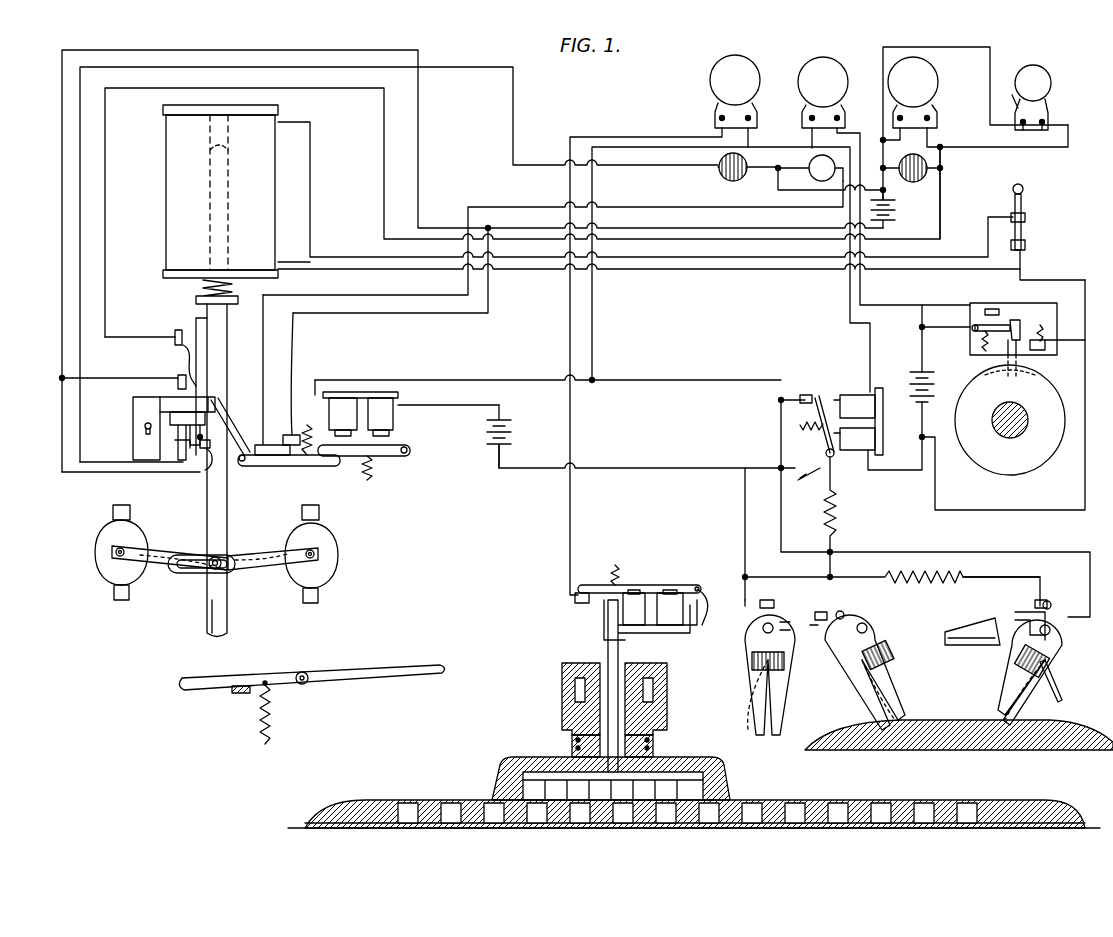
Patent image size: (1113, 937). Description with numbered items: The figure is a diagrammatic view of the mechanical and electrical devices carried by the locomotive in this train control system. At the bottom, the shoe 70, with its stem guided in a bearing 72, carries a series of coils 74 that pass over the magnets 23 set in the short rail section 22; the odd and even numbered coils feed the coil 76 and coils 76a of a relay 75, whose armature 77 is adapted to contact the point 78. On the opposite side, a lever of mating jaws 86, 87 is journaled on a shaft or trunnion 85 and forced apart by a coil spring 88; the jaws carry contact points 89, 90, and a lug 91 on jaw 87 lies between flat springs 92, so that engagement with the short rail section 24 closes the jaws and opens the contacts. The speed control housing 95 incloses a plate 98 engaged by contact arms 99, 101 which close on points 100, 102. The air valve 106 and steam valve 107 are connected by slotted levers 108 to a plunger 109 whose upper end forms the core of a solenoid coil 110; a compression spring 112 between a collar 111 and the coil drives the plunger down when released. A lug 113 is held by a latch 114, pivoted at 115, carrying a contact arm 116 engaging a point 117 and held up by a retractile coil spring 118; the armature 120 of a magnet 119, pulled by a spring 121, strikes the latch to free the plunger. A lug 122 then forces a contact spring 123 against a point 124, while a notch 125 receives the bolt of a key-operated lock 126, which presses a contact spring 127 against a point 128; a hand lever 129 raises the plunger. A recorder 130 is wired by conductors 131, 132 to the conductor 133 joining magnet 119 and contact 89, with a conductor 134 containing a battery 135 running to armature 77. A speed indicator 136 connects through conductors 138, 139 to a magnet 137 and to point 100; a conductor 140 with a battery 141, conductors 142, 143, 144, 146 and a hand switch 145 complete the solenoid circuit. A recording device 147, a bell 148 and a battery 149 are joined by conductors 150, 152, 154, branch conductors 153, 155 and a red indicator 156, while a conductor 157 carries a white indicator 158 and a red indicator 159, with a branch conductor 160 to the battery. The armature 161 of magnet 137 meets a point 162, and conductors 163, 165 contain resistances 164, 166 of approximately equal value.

The short rail section 22 is at (355, 800).
The magnets 23 is at (450, 808).
The short rail section 24 is at (955, 740).
The shoe 70 is at (505, 760).
The bearing 72 is at (562, 678).
The coils 74 is at (685, 785).
The relay 75 is at (658, 628).
The coil 76 is at (635, 608).
The coils 76a is at (705, 600).
The armature 77 is at (655, 585).
The contact point 78 is at (575, 603).
The shaft or trunnion 85 is at (1058, 655).
The jaw 86 is at (790, 738).
The jaw 87 is at (760, 690).
The coil spring 88 is at (890, 650).
The contact point 89 is at (845, 612).
The contact point 90 is at (840, 612).
The lug 91 is at (720, 640).
The flat springs 92 is at (968, 652).
The housing 95 is at (1010, 415).
The plate 98 is at (996, 345).
The contact arm 99 is at (1007, 328).
The contact point 100 is at (1000, 313).
The contact arm 101 is at (1040, 335).
The contact point 102 is at (1036, 350).
The air valve 106 is at (100, 570).
The steam valve 107 is at (330, 572).
The slotted levers 108 is at (160, 555).
The plunger 109 is at (207, 635).
The solenoid coil 110 is at (220, 191).
The collar 111 is at (235, 325).
The compression spring 112 is at (200, 290).
The lug 113 is at (232, 412).
The latch 114 is at (293, 468).
The pivot 115 is at (243, 466).
The contact arm 116 is at (268, 440).
The contact point 117 is at (297, 430).
The retractile coil spring 118 is at (318, 430).
The magnet 119 is at (370, 405).
The armature 120 is at (380, 456).
The spring 121 is at (364, 490).
The lug 122 is at (190, 320).
The contact spring 123 is at (187, 356).
The contact point 124 is at (178, 380).
The notch 125 is at (205, 404).
The key-operated lock 126 is at (133, 402).
The contact spring 127 is at (176, 442).
The contact point 128 is at (205, 466).
The hand lever 129 is at (336, 672).
The recorder 130 is at (735, 60).
The conductor 131 is at (610, 133).
The conductor 132 is at (655, 147).
The conductor 133 is at (680, 380).
The conductor 134 is at (648, 458).
The battery 135 is at (510, 425).
The speed indicator 136 is at (823, 62).
The magnet 137 is at (850, 395).
The conductor 138 is at (850, 310).
The conductor 139 is at (860, 290).
The conductor 140 is at (950, 328).
The battery 141 is at (905, 378).
The conductor 142 is at (1085, 470).
The conductor 143 is at (1075, 278).
The conductor 144 is at (311, 166).
The hand switch 145 is at (1025, 195).
The conductor 146 is at (1022, 282).
The recording device 147 is at (938, 75).
The bell 148 is at (1048, 95).
The battery 149 is at (895, 206).
The conductor 150 is at (963, 47).
The conductor 152 is at (274, 53).
The branch conductor 153 is at (62, 440).
The conductor 154 is at (1040, 160).
The branch conductor 155 is at (935, 142).
The indicator 156 is at (940, 166).
The conductor 157 is at (80, 268).
The indicator 158 is at (815, 165).
The indicator 159 is at (718, 172).
The branch conductor 160 is at (778, 190).
The armature 161 is at (822, 440).
The contact point 162 is at (810, 393).
The conductor 163 is at (1000, 574).
The resistance 164 is at (892, 534).
The conductor 165 is at (830, 548).
The resistance 166 is at (822, 500).